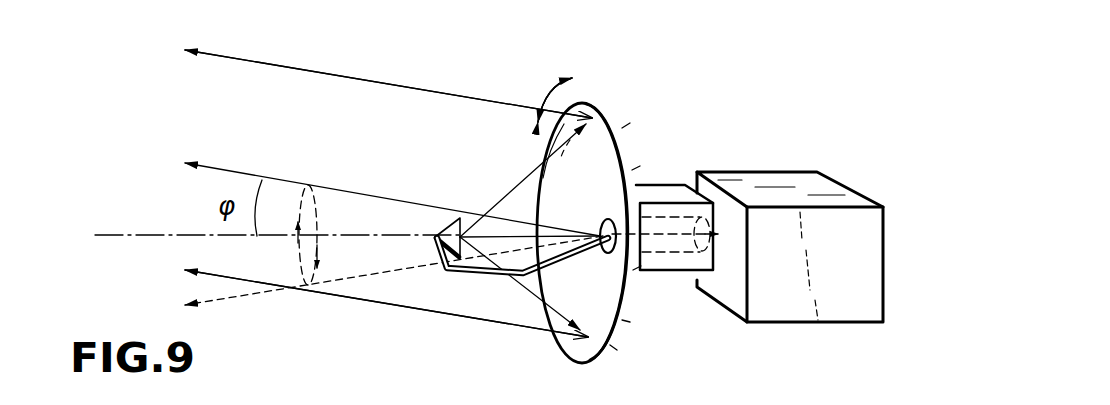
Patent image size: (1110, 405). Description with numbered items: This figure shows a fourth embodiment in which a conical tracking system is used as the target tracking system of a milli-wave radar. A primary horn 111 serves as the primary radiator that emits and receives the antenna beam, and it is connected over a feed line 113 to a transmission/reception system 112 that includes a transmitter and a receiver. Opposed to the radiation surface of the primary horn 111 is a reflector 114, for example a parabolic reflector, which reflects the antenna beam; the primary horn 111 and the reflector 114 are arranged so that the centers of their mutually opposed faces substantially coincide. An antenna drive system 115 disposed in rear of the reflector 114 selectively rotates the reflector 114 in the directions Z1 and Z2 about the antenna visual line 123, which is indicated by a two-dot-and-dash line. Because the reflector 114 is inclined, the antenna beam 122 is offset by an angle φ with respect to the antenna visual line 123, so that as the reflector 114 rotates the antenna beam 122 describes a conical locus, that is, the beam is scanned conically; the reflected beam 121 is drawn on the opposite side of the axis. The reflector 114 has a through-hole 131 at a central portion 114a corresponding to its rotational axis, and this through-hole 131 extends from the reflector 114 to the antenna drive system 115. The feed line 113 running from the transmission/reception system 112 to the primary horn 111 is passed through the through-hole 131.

The primary horn 111 is at (446, 222).
The transmission/reception system 112 is at (752, 172).
The feed line 113 is at (455, 268).
The reflector 114 is at (613, 120).
The central portion 114a is at (600, 218).
The antenna drive system 115 is at (656, 187).
The scanning light beam 121 is at (582, 330).
The antenna beam 122 is at (373, 82).
The antenna visual line 123 is at (123, 233).
The through-hole 131 is at (665, 254).
The rotation direction Z1 is at (572, 89).
The rotation direction Z2 is at (543, 118).